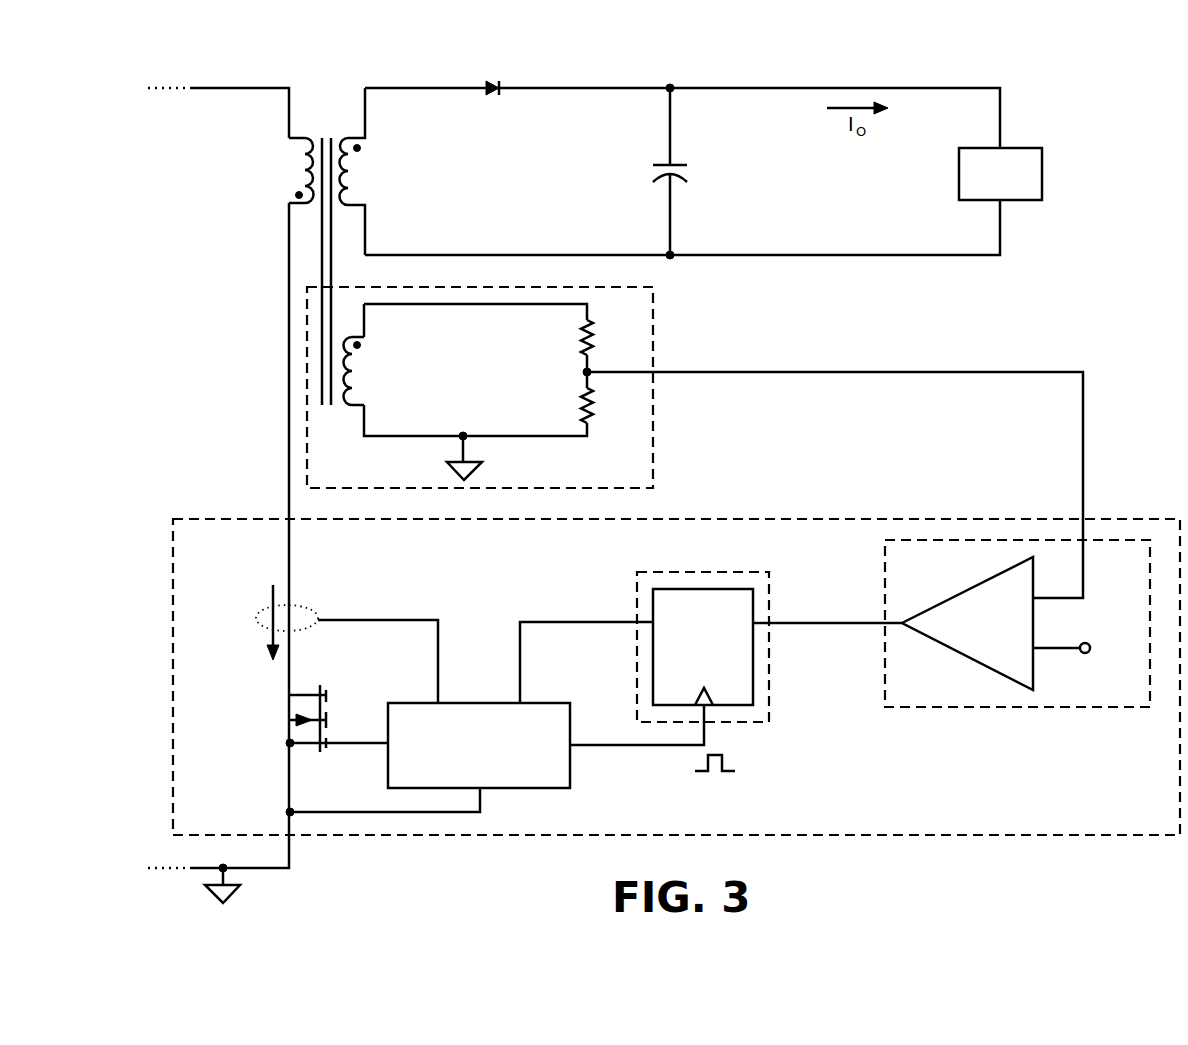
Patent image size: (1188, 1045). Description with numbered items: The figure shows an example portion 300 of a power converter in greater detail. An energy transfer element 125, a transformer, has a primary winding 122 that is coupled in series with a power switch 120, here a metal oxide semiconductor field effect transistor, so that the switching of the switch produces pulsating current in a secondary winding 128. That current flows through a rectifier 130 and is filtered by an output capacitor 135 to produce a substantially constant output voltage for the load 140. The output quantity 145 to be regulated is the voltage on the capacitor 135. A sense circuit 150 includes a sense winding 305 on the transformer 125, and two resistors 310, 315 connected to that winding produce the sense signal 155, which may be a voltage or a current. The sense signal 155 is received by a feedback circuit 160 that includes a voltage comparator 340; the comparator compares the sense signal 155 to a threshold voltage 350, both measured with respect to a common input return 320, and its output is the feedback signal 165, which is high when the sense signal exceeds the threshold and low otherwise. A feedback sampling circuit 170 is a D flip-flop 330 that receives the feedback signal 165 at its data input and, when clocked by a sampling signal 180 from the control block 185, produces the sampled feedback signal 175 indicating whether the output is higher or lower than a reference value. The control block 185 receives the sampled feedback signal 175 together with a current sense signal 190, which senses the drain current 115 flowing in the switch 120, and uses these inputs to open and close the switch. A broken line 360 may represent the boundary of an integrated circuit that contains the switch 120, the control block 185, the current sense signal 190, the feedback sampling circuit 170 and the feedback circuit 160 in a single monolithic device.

The current I_D 115 is at (268, 628).
The power switch S1 120 is at (278, 713).
The primary winding 122 is at (293, 167).
The energy transfer element T1 125 is at (337, 132).
The secondary winding 128 is at (357, 173).
The rectifier D1 130 is at (467, 100).
The capacitor C1 135 is at (661, 153).
The load 140 is at (1018, 133).
The output quantity U_O 145 is at (747, 168).
The sense circuit 150 is at (658, 452).
The sense signal U_SENSE 155 is at (1072, 425).
The feedback circuit 160 is at (985, 715).
The feedback signal U_FB 165 is at (818, 632).
The feedback sampling circuit 170 is at (757, 730).
The sampled feedback signal U_FB* 175 is at (578, 632).
The sampling signal P_S 180 is at (613, 757).
The control block 185 is at (457, 700).
The current sense signal 190 is at (327, 628).
The portion of power converter 300 is at (1170, 294).
The sense winding 305 is at (372, 375).
The resistor 310 is at (562, 330).
The resistor 315 is at (562, 400).
The common input return 320 is at (248, 888).
The D flip-flop 330 is at (722, 657).
The voltage comparator 340 is at (1003, 636).
The threshold voltage V_TH 350 is at (1088, 636).
The broken line 360 is at (222, 508).